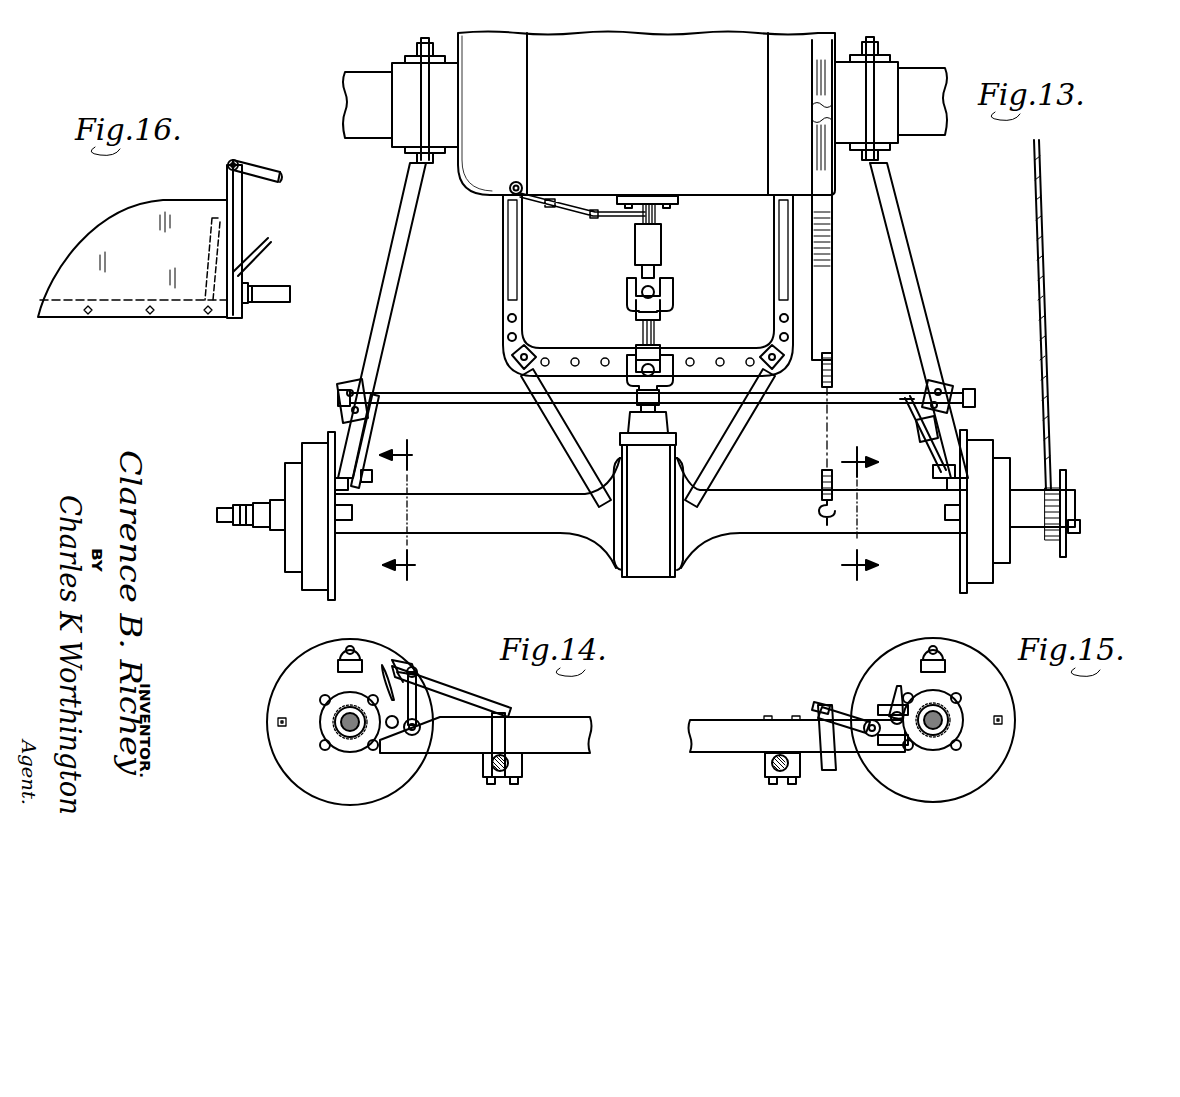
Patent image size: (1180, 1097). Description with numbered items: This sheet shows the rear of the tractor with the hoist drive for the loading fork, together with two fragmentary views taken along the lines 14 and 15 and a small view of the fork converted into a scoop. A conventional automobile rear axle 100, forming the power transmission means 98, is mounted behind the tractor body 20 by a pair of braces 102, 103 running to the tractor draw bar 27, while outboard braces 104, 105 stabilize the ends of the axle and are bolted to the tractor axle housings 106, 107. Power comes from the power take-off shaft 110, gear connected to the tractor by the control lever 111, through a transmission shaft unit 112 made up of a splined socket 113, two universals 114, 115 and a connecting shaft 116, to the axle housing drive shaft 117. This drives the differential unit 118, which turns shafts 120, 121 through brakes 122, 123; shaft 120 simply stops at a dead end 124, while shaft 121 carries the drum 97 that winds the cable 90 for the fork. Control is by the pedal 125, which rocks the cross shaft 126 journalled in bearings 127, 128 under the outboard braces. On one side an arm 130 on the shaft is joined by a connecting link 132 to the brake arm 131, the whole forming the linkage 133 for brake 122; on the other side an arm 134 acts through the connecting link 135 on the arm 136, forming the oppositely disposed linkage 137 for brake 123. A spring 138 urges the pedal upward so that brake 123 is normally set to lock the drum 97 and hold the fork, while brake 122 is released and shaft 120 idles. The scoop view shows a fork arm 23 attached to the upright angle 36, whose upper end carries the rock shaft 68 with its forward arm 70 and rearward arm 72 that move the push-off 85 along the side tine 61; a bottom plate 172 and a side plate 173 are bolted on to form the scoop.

In FIG. 13, the tank 20 is at (664, 118).
In FIG. 13, the foot operated lever or pedal 125 is at (818, 92).
In FIG. 13, the rear axle housing 106 is at (366, 84).
In FIG. 13, the rear axle housing 107 is at (904, 84).
In FIG. 13, the outboard brace 104 is at (392, 265).
In FIG. 14, the outboard brace 104 is at (575, 715).
In FIG. 13, the outboard brace 105 is at (908, 245).
In FIG. 15, the outboard brace 105 is at (711, 720).
In FIG. 13, the tractor draw bar 27 is at (503, 318).
In FIG. 13, the brace 102 is at (565, 425).
In FIG. 13, the brace 103 is at (734, 415).
In FIG. 13, the cross shaft 126 is at (428, 393).
In FIG. 14, the cross shaft 126 is at (506, 783).
In FIG. 15, the cross shaft 126 is at (768, 783).
In FIG. 13, the control lever 111 is at (614, 217).
In FIG. 13, the power take-off shaft 110 is at (658, 220).
In FIG. 13, the socket 113 is at (654, 241).
In FIG. 13, the universal 114 is at (626, 292).
In FIG. 13, the transmission shaft unit 112 is at (674, 322).
In FIG. 13, the shaft 116 is at (643, 332).
In FIG. 13, the universal 115 is at (640, 350).
In FIG. 13, the axle housing drive shaft 117 is at (664, 415).
In FIG. 13, the differential unit 118 is at (645, 572).
In FIG. 13, the rear axle 100 is at (560, 520).
In FIG. 13, the power transmission means 98 is at (710, 552).
In FIG. 13, the brake 122 is at (318, 443).
In FIG. 14, the brake 122 is at (282, 690).
In FIG. 13, the dead end 124 is at (262, 521).
In FIG. 13, the brake 123 is at (980, 446).
In FIG. 15, the brake 123 is at (915, 654).
In FIG. 13, the drum 97 is at (1030, 527).
In FIG. 13, the cable 90 is at (1048, 335).
In FIG. 13, the spring 138 is at (822, 480).
In FIG. 13, the bearing 127 is at (345, 383).
In FIG. 14, the bearing 127 is at (482, 763).
In FIG. 13, the link mechanism 133 is at (372, 448).
In FIG. 14, the link mechanism 133 is at (422, 660).
In FIG. 13, the bearing 128 is at (950, 383).
In FIG. 15, the bearing 128 is at (762, 766).
In FIG. 13, the operating linkage 137 is at (924, 452).
In FIG. 15, the operating linkage 137 is at (826, 708).
In FIG. 13, the section line 14— 14 is at (416, 510).
In FIG. 13, the section line 15— 15 is at (847, 500).
In FIG. 16, the side plate 173 is at (126, 225).
In FIG. 16, the upright angle 36 is at (236, 215).
In FIG. 16, the forwardly extending arm 70 is at (214, 180).
In FIG. 16, the rock shaft 68 is at (240, 164).
In FIG. 16, the rearwardly extending arm 72 is at (282, 175).
In FIG. 16, the push-off 85 is at (207, 251).
In FIG. 16, the fork arm 23 is at (274, 288).
In FIG. 16, the plate 172 is at (122, 310).
In FIG. 16, the side angle tine 61 is at (192, 316).
In FIG. 14, the shaft 120 is at (340, 725).
In FIG. 14, the connecting link 132 is at (468, 695).
In FIG. 14, the arm 131 is at (427, 682).
In FIG. 14, the arm 130 is at (522, 754).
In FIG. 15, the shaft 121 is at (942, 724).
In FIG. 15, the arm 136 is at (848, 732).
In FIG. 15, the arm 134 is at (826, 777).
In FIG. 15, the connecting link 135 is at (810, 725).